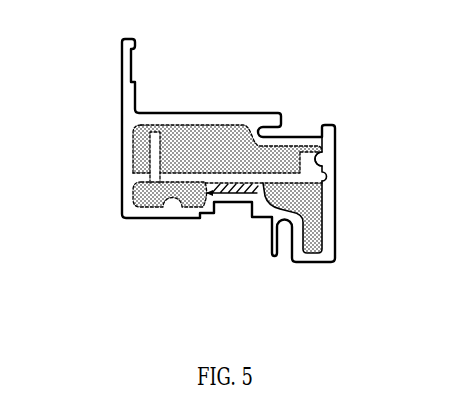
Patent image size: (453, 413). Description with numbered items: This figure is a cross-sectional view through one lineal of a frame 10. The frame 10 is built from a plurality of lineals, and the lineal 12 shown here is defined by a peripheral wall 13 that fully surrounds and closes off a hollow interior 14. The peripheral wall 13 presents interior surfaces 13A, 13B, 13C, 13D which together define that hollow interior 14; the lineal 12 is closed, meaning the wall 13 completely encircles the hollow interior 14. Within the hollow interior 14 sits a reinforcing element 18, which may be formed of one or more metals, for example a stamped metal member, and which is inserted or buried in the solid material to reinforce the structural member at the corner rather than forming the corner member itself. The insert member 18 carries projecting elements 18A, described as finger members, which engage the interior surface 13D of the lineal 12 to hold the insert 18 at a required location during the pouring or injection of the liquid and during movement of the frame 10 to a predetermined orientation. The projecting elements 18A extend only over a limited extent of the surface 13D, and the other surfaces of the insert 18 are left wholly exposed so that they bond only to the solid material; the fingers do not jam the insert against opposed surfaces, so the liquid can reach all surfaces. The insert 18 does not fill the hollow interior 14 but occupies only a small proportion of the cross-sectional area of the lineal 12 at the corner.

The frame 10 is at (267, 150).
The lineal 12 is at (335, 181).
The peripheral wall 13 is at (331, 219).
The interior surface 13A is at (188, 130).
The interior surface 13B is at (127, 135).
The interior surface 13C is at (322, 153).
The interior surface 13D is at (180, 199).
The hollow interior 14 is at (141, 168).
The reinforcing element 18 is at (160, 181).
The projecting elements 18A is at (240, 187).